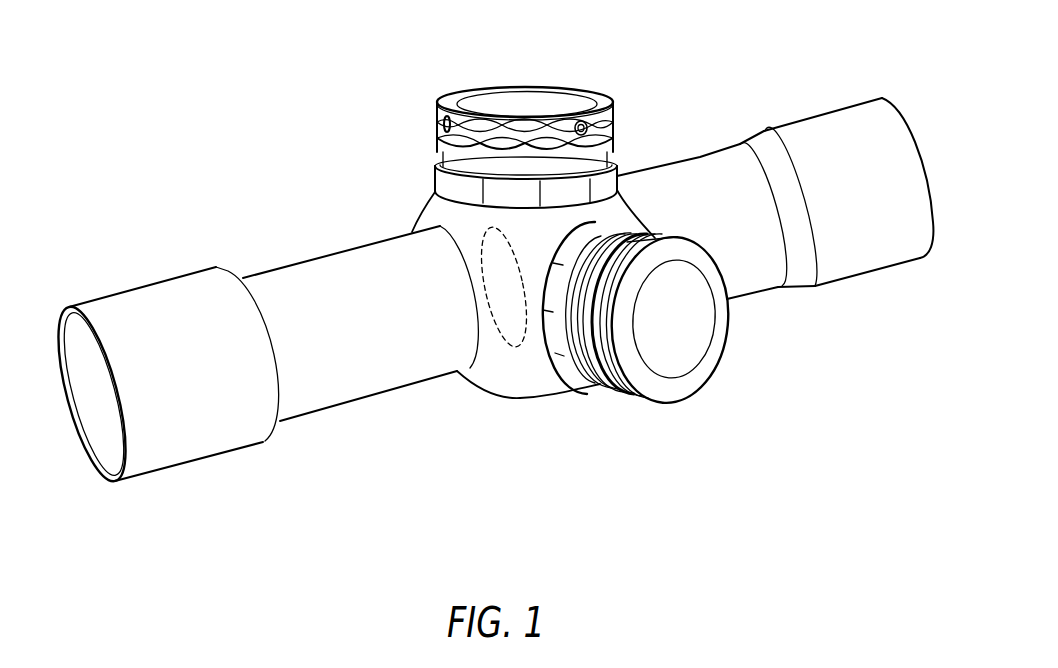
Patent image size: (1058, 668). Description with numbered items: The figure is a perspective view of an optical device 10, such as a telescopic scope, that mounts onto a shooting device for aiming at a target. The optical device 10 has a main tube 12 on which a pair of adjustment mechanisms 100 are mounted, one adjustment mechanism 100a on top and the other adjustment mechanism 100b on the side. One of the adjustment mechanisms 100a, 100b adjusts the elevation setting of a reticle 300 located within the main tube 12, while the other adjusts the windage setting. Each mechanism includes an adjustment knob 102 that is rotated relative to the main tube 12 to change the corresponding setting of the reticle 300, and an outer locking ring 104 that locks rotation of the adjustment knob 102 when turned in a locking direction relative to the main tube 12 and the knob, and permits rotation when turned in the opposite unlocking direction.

The optical device 10 is at (240, 73).
The main tube 12 is at (342, 244).
The adjustment mechanisms 100 is at (606, 227).
The adjustment mechanism 100a is at (490, 84).
The adjustment mechanism 100b is at (685, 355).
The adjustment knob 102 is at (615, 115).
The outer locking ring 104 is at (435, 177).
The reticle 300 is at (517, 347).